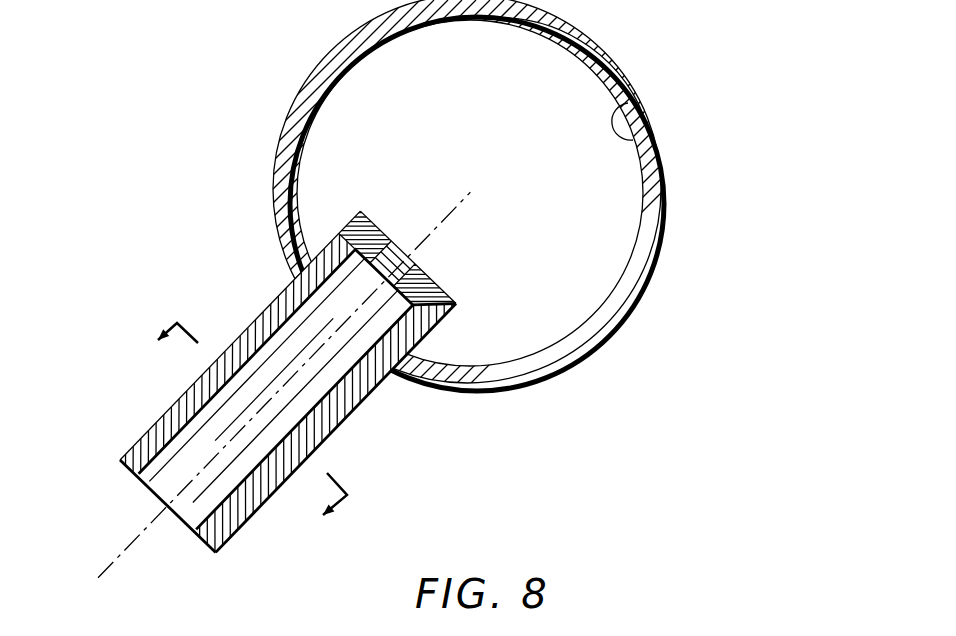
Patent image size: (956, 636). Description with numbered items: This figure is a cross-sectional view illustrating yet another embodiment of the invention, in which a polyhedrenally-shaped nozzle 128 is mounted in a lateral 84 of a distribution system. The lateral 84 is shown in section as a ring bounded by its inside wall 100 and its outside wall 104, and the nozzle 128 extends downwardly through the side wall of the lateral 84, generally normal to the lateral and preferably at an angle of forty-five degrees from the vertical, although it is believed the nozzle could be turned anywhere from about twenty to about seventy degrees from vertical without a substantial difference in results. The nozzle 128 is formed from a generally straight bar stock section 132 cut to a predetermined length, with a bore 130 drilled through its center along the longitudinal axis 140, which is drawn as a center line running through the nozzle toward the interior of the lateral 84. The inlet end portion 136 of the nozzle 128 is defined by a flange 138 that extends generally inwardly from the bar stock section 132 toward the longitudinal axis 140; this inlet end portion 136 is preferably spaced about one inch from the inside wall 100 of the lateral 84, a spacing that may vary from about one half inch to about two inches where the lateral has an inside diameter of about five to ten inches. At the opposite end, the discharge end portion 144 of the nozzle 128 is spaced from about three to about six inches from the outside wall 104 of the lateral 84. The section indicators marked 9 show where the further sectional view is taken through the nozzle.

The lateral 84 is at (581, 40).
The inside wall 100 is at (640, 107).
The outside wall 104 is at (666, 190).
The polyhedrenally-shaped nozzle 128 is at (284, 381).
The bore 130 is at (276, 389).
The bar stock section 132 is at (329, 413).
The inlet end portion 136 is at (423, 293).
The flange 138 is at (365, 237).
The longitudinal axis 140 is at (232, 285).
The discharge end portion 144 is at (243, 349).
The section line 9- 9 is at (252, 419).